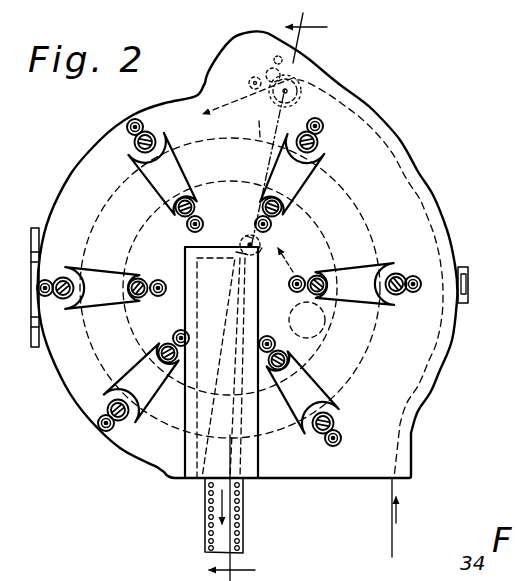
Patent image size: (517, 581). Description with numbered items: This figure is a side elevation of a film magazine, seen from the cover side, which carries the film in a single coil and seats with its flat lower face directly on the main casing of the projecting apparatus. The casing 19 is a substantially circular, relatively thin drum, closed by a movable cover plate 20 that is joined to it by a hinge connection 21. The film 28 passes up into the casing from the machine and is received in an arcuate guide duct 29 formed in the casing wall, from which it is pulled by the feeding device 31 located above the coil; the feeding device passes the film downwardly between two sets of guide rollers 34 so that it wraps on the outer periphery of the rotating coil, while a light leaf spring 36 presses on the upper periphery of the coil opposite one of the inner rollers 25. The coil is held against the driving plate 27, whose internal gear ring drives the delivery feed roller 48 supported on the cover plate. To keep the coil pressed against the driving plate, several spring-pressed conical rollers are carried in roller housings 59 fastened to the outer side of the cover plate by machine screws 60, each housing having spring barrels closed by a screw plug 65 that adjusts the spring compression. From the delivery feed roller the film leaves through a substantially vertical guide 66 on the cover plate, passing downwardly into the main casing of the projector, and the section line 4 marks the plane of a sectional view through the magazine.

The section line 4- 4 is at (276, 296).
The casing 19 is at (419, 150).
The cover plate 20 is at (84, 173).
The hinge connection 21 is at (37, 228).
The rollers 25 is at (293, 314).
The driving plate 27 is at (358, 184).
The film 28 is at (241, 505).
The arcuate guide duct 29 is at (431, 177).
The feeding device 31 is at (298, 78).
The guide rollers 34 is at (265, 74).
The leaf spring 36 is at (252, 159).
The delivery feed roller 48 is at (246, 233).
The roller housing 59 is at (321, 157).
The machine screws 60 is at (323, 118).
The screw plug 65 is at (404, 272).
The vertical guide 66 is at (195, 450).